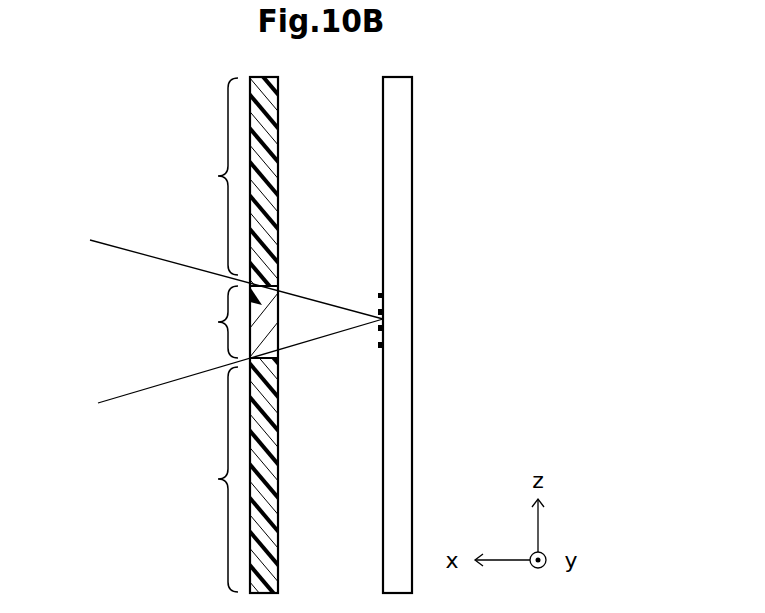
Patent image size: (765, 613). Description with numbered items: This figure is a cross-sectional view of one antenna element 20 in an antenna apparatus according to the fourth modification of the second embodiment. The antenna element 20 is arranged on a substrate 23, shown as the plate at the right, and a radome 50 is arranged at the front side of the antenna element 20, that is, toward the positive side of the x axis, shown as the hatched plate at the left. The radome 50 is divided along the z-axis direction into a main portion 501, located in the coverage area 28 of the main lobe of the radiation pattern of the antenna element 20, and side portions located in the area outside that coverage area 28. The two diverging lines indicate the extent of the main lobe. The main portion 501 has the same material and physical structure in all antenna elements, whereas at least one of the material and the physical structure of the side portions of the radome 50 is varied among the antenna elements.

The antenna element 20 is at (427, 314).
The substrate 23 is at (434, 335).
The coverage area of the main lobe 28 is at (210, 322).
The radome 50 is at (293, 321).
The main portion 501 is at (301, 322).